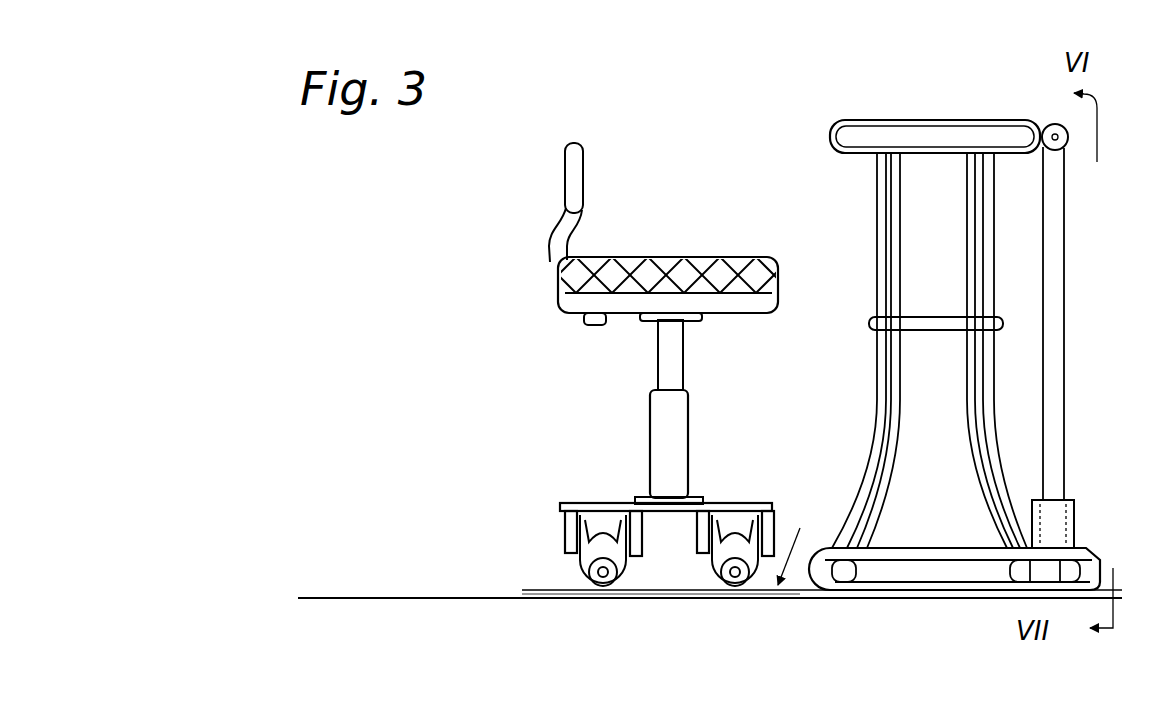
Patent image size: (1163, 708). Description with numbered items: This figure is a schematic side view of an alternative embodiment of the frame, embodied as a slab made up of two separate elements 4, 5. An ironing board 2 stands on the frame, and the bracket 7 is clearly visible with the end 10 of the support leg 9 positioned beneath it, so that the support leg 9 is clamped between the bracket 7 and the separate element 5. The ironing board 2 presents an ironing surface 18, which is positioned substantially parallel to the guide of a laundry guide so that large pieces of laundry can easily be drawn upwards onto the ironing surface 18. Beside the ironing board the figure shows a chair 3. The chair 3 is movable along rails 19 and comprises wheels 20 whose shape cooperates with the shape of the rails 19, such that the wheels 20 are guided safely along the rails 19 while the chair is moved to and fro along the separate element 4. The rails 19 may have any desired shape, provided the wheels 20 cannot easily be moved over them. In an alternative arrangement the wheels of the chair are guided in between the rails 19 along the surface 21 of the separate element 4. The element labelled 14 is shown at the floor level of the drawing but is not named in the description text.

The ironing board 2 is at (943, 335).
The chair 3 is at (627, 401).
The separate element 4 is at (548, 600).
The separate element 5 is at (903, 598).
The bracket 7 is at (880, 545).
The support leg 9 is at (966, 446).
The end of support leg 10 is at (950, 575).
The floor 14 is at (425, 597).
The ironing surface 18 is at (876, 114).
The rails 19 is at (608, 600).
The wheels 20 is at (588, 503).
The surface 21 is at (657, 580).